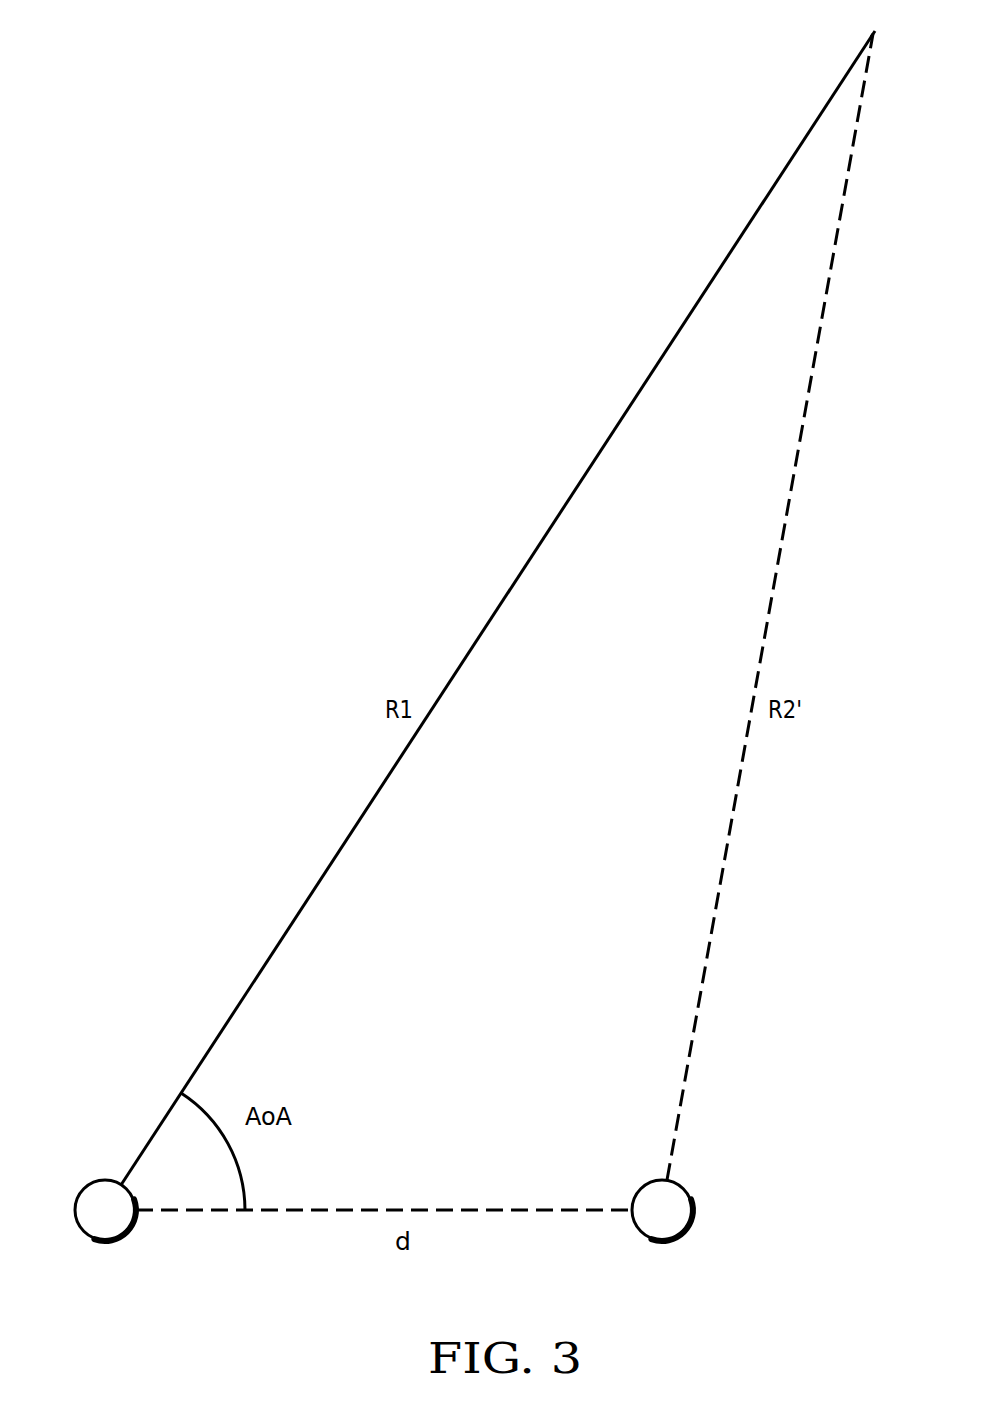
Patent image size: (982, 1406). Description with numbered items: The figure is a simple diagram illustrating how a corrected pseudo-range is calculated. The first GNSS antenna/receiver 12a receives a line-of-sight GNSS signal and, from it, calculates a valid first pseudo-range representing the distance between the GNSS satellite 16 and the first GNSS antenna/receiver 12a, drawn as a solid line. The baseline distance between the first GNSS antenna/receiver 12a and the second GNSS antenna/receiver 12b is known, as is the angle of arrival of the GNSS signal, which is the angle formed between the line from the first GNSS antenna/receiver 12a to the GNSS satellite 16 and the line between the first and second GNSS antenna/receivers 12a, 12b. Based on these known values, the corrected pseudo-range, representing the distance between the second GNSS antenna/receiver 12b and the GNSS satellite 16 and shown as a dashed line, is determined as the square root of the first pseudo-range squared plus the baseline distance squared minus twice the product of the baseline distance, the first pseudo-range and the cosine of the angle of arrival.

The first GNSS antenna/receiver 12a is at (88, 1223).
The second GNSS antenna/receiver 12b is at (684, 1224).
The GNSS satellite 16 is at (876, 18).